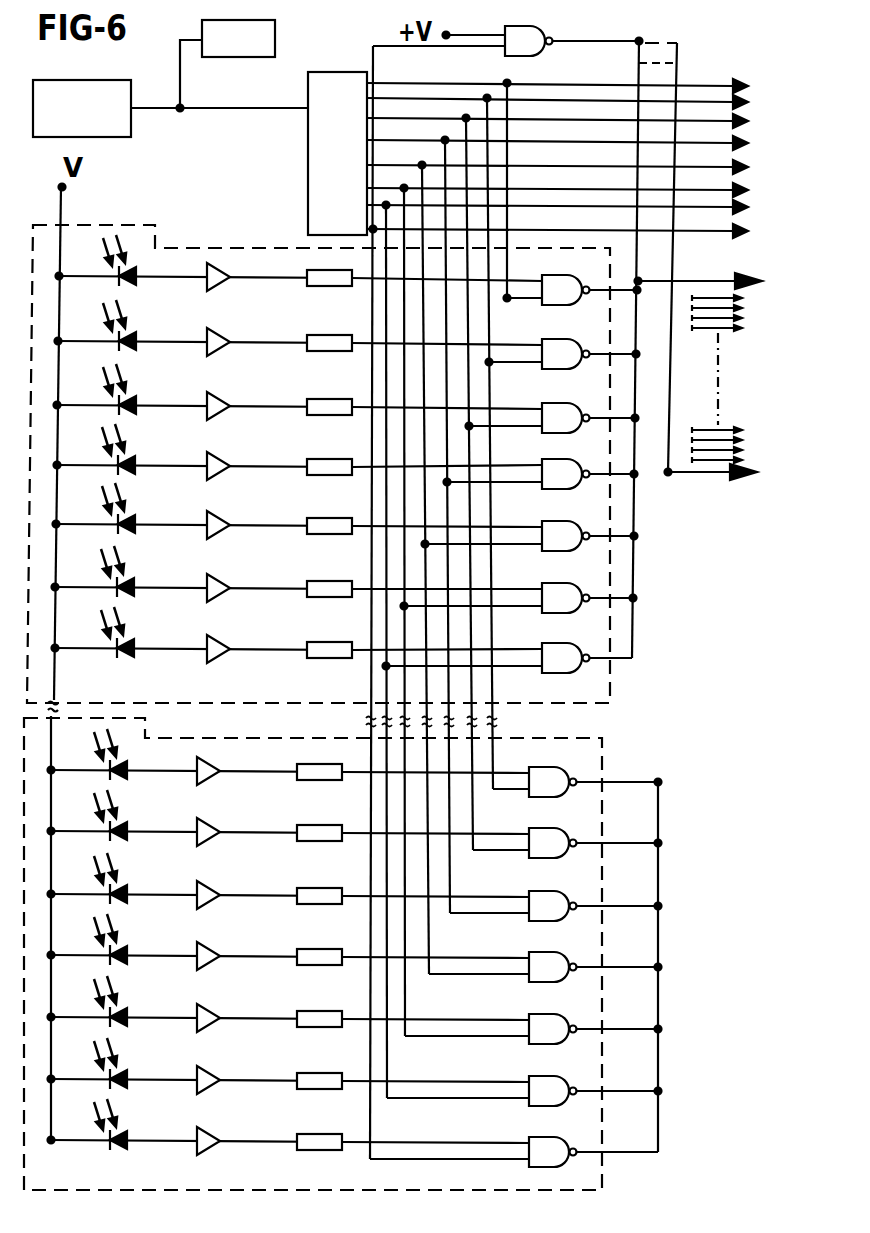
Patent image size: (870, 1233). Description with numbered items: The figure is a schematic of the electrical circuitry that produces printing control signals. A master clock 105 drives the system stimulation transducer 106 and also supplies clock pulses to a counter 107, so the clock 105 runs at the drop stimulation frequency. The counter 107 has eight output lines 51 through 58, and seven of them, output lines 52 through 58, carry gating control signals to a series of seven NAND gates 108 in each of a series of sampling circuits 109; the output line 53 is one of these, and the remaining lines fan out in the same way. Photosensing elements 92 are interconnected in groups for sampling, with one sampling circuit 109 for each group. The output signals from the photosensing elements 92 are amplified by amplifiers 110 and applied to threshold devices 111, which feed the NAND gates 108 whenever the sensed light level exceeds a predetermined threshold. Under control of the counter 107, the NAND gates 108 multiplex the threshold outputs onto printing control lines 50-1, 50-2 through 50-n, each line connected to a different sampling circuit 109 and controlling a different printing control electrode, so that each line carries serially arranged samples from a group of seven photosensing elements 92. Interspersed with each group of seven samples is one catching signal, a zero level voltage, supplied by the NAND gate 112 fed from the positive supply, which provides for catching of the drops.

The master clock 105 is at (101, 67).
The system stimulation transducer 106 is at (268, 21).
The counter 107 is at (308, 131).
The NAND gate 112 is at (529, 41).
The output line 51 is at (683, 86).
The output line 52 is at (694, 102).
The output line 53 is at (716, 121).
The output line 58 is at (567, 143).
The printing control line 50-1 is at (691, 270).
The printing control line 50-2 is at (727, 294).
The printing control line 50-n is at (700, 476).
The sampling circuit 109 is at (612, 632).
The photosensing element 92 is at (136, 334).
The amplifier 110 is at (218, 330).
The threshold device 111 is at (327, 335).
The NAND gate 108 is at (556, 339).